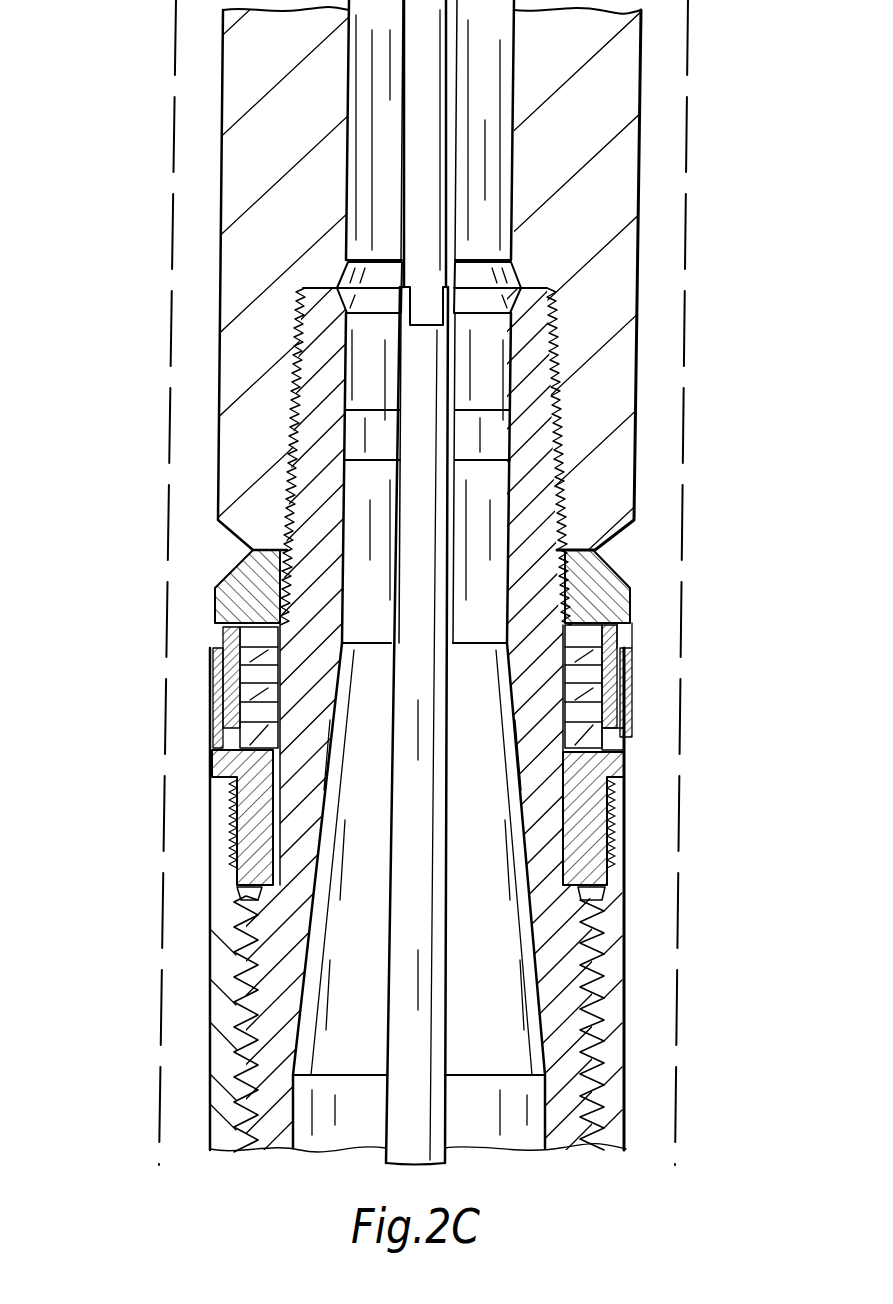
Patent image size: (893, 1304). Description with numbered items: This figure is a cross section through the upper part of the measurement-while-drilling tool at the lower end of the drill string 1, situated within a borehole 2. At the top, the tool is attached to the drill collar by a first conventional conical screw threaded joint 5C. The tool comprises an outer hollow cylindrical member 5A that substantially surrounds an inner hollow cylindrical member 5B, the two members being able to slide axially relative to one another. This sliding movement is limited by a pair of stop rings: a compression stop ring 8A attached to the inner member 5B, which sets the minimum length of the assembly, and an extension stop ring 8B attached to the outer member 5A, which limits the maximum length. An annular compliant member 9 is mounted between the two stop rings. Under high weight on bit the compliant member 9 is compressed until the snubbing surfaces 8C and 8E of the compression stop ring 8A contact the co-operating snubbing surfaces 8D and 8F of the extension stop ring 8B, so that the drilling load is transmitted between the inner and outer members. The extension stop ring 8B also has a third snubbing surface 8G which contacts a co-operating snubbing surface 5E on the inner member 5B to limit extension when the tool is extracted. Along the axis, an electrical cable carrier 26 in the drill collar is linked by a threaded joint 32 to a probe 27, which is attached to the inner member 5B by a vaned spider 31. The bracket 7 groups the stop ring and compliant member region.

The drill string 1 is at (601, 496).
The borehole 2 is at (689, 307).
The outer hollow cylindrical member 5A is at (612, 1126).
The inner hollow cylindrical member 5B is at (567, 937).
The first conical screw threaded joint 5C is at (296, 426).
The co-operating snubbing surface 5E is at (245, 916).
The seal assembly 7 is at (89, 550).
The compression stop ring 8A is at (605, 570).
The extension stop ring 8B is at (590, 827).
The snubbing surface 8C is at (615, 633).
The co-operating snubbing surface 8D is at (627, 646).
The snubbing surface 8E is at (622, 735).
The co-operating snubbing surface 8F is at (620, 742).
The third snubbing surface 8G is at (240, 865).
The annular compliant member 9 is at (620, 638).
The electrical cable carrier 26 is at (433, 137).
The probe 27 is at (430, 1017).
The vaned spider 31 is at (497, 442).
The threaded joint 32 is at (458, 298).